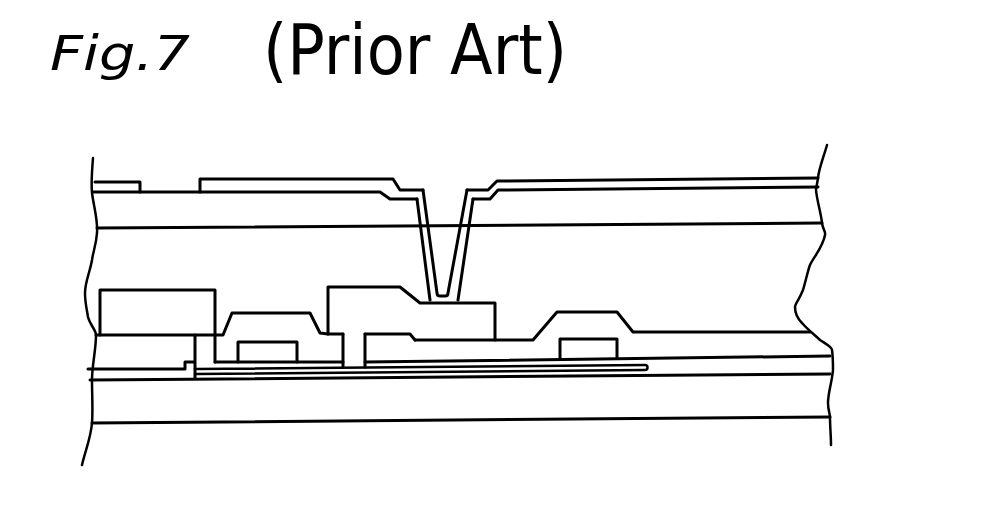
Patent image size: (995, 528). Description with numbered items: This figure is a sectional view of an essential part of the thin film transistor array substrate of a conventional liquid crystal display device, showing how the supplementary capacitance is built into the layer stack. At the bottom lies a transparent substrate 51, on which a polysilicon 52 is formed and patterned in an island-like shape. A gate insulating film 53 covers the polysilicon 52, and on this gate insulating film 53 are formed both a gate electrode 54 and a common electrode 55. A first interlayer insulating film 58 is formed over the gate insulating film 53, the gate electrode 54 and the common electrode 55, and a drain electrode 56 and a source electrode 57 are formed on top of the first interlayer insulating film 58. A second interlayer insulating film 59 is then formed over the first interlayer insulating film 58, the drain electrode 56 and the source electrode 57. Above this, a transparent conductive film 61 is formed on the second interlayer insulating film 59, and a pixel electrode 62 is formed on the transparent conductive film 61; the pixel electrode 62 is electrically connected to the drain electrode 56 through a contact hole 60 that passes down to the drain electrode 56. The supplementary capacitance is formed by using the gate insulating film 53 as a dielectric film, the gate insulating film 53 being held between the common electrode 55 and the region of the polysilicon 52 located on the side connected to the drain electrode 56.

The transparent substrate 51 is at (613, 400).
The polysilicon 52 is at (283, 380).
The gate insulating film 53 is at (727, 367).
The gate electrode 54 is at (255, 352).
The common electrode 55 is at (580, 348).
The drain electrode 56 is at (445, 322).
The source electrode 57 is at (152, 308).
The first interlayer insulating film 58 is at (802, 342).
The second interlayer insulating film 59 is at (757, 283).
The contact hole 60 is at (445, 222).
The transparent conductive film 61 is at (702, 208).
The pixel electrode 62 is at (628, 180).